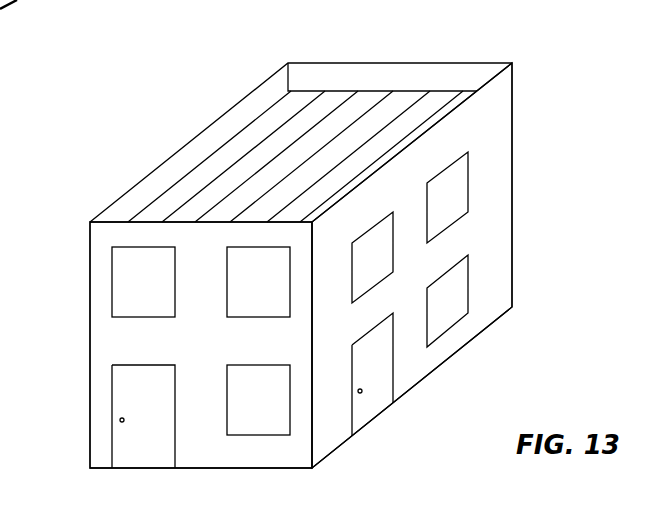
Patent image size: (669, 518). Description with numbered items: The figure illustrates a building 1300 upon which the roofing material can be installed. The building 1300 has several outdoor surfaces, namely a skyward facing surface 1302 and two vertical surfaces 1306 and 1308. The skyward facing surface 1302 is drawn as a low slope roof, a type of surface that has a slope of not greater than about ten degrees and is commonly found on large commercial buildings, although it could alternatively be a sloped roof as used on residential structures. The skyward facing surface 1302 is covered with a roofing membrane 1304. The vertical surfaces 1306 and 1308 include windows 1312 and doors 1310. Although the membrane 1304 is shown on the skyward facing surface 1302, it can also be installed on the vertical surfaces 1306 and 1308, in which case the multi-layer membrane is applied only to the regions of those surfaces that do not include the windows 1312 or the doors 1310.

The building 1300 is at (237, 45).
The skyward facing surface 1302 is at (298, 93).
The roofing membrane 1304 is at (437, 97).
The vertical surface 1306 is at (501, 120).
The vertical surface 1308 is at (97, 245).
The door 1310 is at (152, 452).
The window 1312 is at (128, 290).